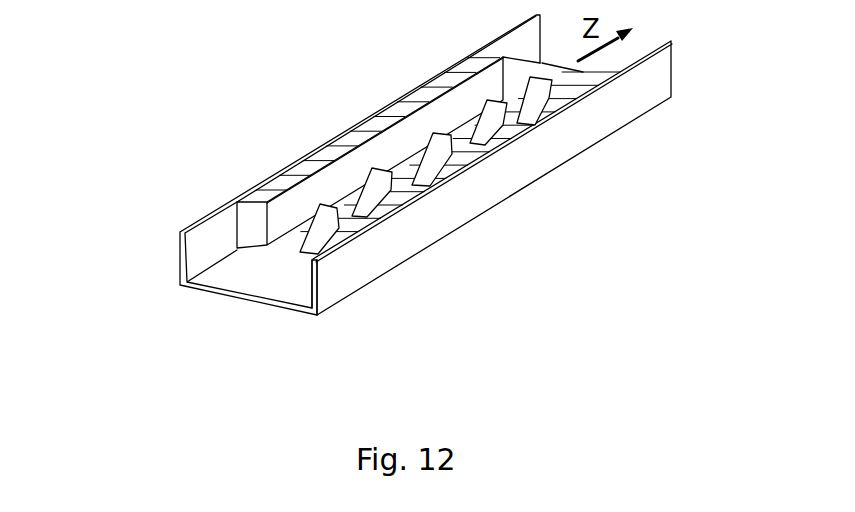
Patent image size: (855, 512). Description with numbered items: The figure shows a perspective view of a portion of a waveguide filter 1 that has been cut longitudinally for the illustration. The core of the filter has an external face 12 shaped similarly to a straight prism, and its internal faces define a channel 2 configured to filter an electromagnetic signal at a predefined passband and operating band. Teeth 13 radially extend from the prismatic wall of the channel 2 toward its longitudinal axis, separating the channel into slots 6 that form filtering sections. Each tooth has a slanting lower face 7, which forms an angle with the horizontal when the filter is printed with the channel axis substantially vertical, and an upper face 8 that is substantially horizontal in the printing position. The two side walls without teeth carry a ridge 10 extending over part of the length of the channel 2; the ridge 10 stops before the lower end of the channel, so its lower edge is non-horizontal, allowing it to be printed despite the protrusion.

The waveguide filter 1 is at (409, 209).
The channel 2 is at (426, 194).
The slot 6 is at (352, 180).
The lower face 7 is at (318, 228).
The upper face 8 is at (350, 217).
The ridge 10 is at (469, 173).
The external face 12 is at (522, 158).
The teeth 13 is at (370, 172).